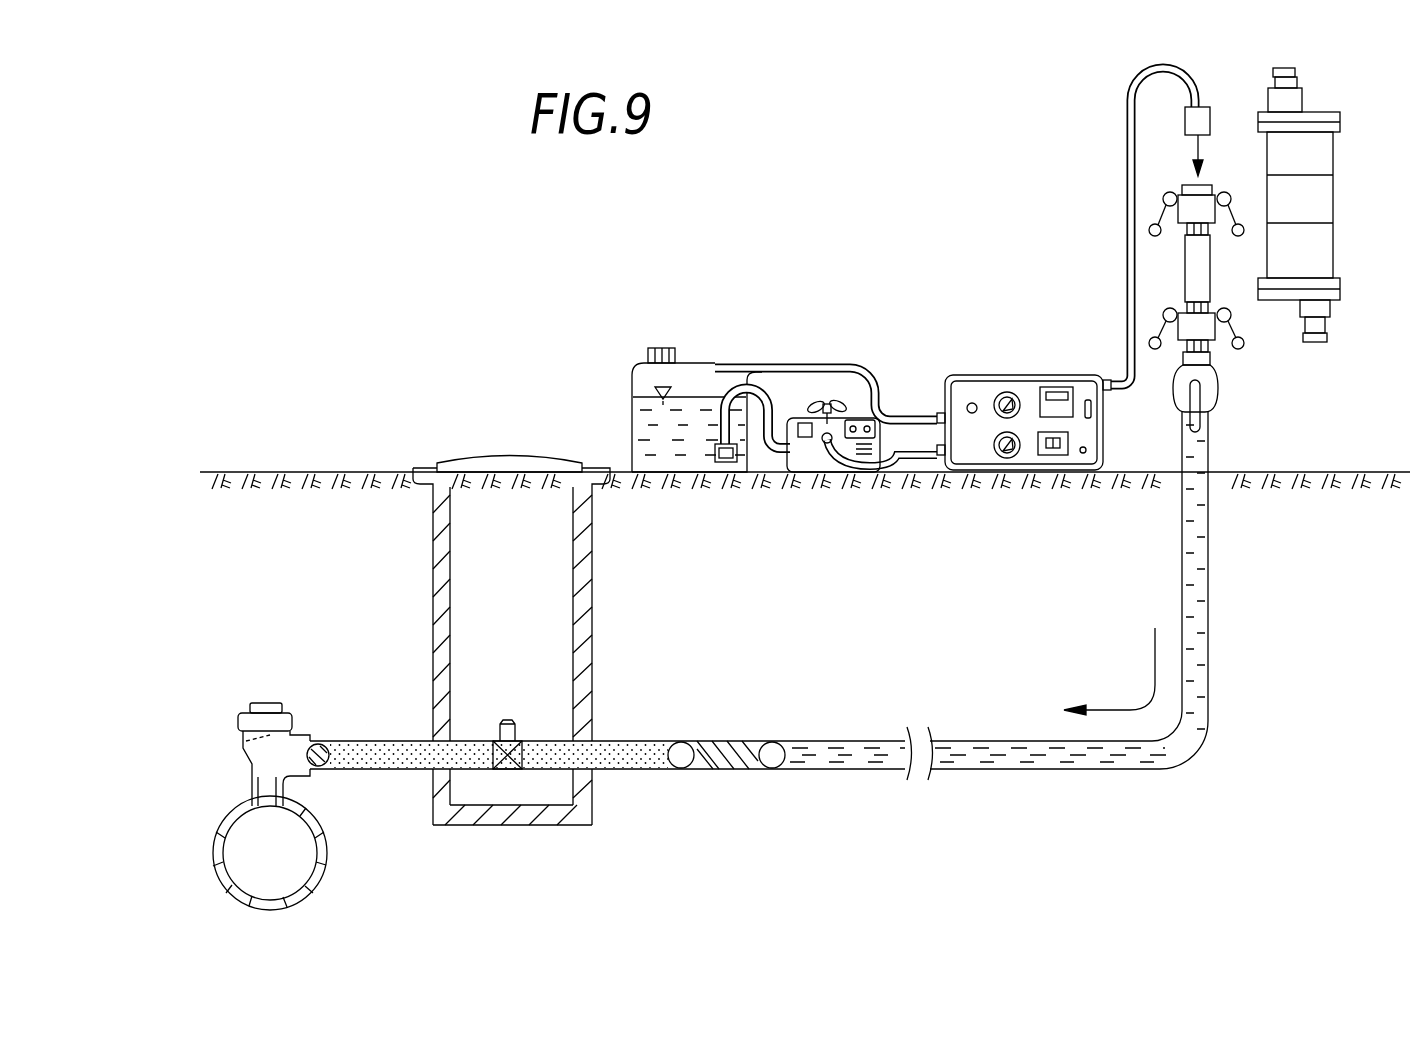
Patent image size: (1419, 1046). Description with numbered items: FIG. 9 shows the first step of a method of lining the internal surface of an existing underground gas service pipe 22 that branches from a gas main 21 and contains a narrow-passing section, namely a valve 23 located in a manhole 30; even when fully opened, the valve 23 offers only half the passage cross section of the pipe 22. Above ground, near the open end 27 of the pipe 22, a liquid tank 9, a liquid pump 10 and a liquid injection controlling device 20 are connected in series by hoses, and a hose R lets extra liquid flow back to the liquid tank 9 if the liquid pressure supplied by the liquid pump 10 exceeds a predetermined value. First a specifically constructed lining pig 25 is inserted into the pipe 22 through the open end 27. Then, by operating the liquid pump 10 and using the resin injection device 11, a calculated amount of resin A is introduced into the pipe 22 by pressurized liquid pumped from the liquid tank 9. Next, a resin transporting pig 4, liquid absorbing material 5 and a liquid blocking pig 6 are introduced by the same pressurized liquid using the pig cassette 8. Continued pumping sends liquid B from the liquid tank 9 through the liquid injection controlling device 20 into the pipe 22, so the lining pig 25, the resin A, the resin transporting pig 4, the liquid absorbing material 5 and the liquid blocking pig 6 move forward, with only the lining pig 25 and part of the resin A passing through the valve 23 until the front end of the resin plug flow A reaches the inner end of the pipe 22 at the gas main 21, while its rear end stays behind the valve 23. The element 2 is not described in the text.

The valve 2 is at (303, 718).
The resin transporting pig 4 is at (681, 758).
The liquid absorbing material 5 is at (732, 760).
The liquid blocking pig 6 is at (773, 760).
The pig cassette 8 is at (1198, 278).
The liquid tank 9 is at (643, 362).
The liquid pump 10 is at (818, 448).
The resin injection device 11 is at (1318, 142).
The liquid injection controlling device 20 is at (1021, 375).
The gas main 21 is at (320, 878).
The underground gas service pipe 22 is at (328, 740).
The valve 23 is at (520, 722).
The lining pig 25 is at (320, 768).
The open end 27 is at (1205, 408).
The manhole 30 is at (497, 460).
The resin plug flow A is at (640, 741).
The liquid B is at (658, 458).
The hose R is at (857, 360).